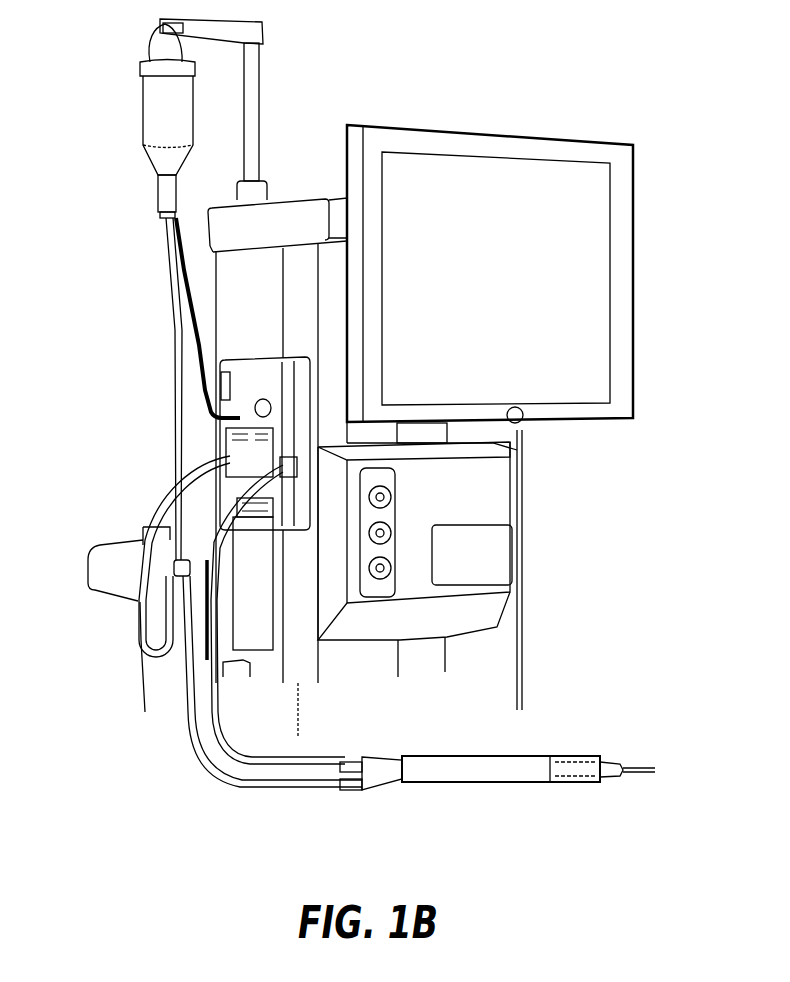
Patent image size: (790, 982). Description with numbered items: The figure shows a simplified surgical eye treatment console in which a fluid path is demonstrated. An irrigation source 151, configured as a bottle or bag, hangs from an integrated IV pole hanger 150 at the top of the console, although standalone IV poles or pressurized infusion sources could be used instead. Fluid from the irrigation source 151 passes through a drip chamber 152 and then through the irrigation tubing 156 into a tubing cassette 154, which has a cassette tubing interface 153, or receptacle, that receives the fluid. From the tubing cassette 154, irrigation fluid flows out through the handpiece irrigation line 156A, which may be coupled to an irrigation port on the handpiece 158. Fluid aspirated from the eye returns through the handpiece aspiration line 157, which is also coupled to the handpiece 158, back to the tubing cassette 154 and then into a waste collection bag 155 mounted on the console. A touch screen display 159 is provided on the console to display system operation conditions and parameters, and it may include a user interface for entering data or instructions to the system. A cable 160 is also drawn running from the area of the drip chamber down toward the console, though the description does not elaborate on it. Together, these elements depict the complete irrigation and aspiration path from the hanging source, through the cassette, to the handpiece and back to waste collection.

The IV pole hanger 150 is at (157, 30).
The irrigation source 151 is at (141, 115).
The drip chamber 152 is at (156, 205).
The cassette tubing interface 153 is at (255, 385).
The tubing cassette 154 is at (252, 455).
The waste collection bag 155 is at (255, 596).
The irrigation tubing 156 is at (163, 258).
The handpiece irrigation line 156A is at (183, 727).
The aspiration line 157 is at (246, 742).
The handpiece 158 is at (540, 753).
The touch screen display 159 is at (570, 382).
The cable 160 is at (193, 347).